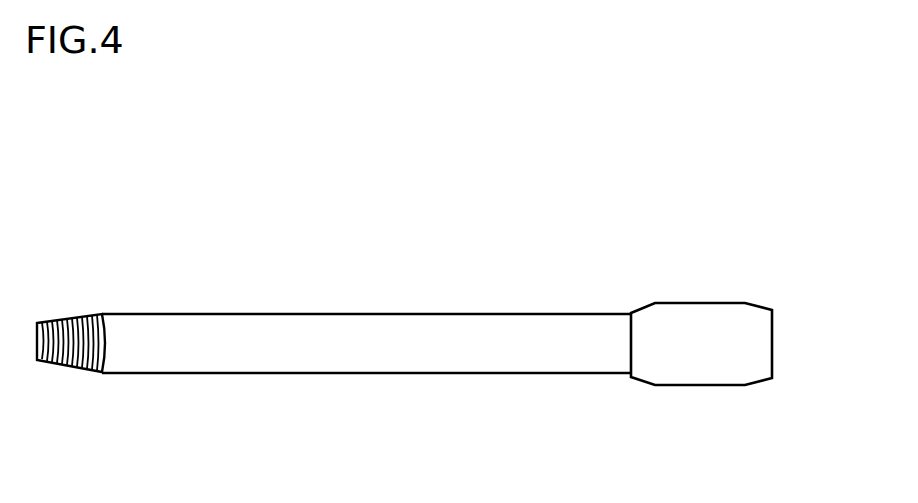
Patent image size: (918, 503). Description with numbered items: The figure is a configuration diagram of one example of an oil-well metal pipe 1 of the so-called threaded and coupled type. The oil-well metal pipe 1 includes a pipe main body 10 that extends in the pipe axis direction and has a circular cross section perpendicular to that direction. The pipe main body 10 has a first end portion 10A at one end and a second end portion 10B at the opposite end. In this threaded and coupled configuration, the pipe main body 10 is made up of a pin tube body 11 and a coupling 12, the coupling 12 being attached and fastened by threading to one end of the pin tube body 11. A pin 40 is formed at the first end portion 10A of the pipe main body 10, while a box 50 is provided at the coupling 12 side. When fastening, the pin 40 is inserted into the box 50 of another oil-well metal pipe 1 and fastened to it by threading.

The oil-well metal pipe 1 is at (396, 106).
The pipe main body 10 is at (404, 302).
The first end portion 10A is at (70, 302).
The second end portion 10B is at (755, 290).
The pin tube body 11 is at (358, 322).
The coupling 12 is at (700, 322).
The pin 40 is at (69, 362).
The box 50 is at (753, 365).